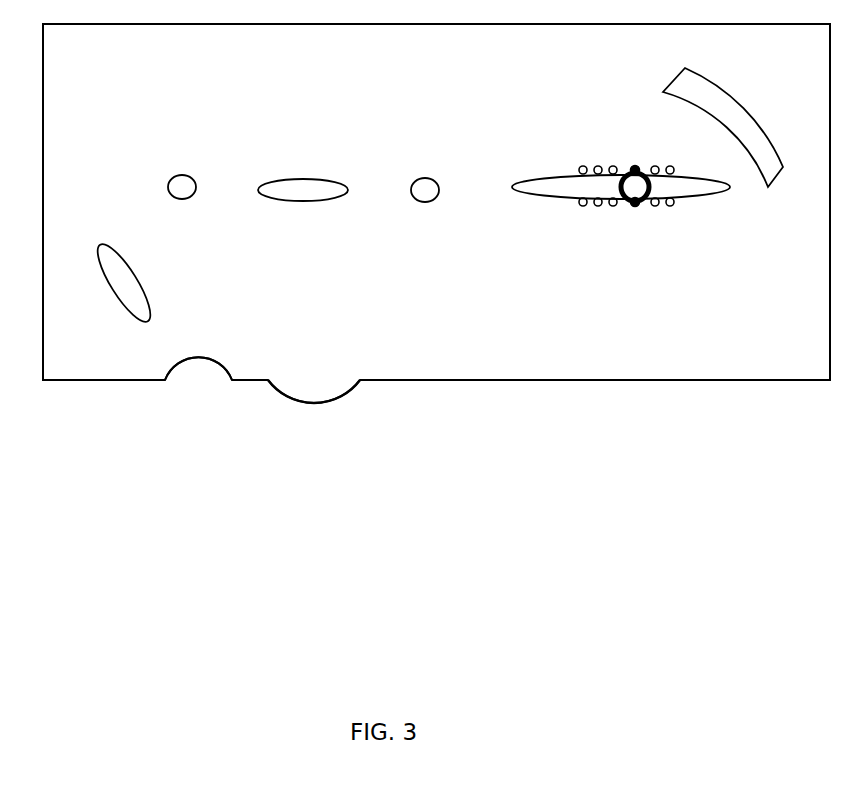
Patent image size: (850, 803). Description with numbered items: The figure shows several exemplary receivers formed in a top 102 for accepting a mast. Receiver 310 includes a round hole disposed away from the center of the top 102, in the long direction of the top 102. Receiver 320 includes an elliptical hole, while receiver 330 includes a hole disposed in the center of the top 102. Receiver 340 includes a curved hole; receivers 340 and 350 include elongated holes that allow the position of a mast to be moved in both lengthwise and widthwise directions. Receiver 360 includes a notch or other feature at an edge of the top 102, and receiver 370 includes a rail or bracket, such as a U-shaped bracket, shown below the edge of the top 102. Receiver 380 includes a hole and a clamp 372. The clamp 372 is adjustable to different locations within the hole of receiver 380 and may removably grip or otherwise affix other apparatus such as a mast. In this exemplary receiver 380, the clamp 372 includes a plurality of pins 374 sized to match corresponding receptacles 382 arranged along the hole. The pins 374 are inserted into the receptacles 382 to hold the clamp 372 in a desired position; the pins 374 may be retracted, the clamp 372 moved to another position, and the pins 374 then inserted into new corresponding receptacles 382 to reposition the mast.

The top 102 is at (127, 71).
The receiver 310 is at (193, 154).
The receiver 320 is at (315, 160).
The receiver 330 is at (436, 159).
The receiver 340 is at (729, 66).
The receiver 350 is at (145, 261).
The receiver 360 is at (218, 335).
The receiver 370 is at (308, 403).
The clamp 372 is at (628, 198).
The pins 374 is at (635, 166).
The receiver 380 is at (685, 198).
The receptacles 382 is at (580, 201).